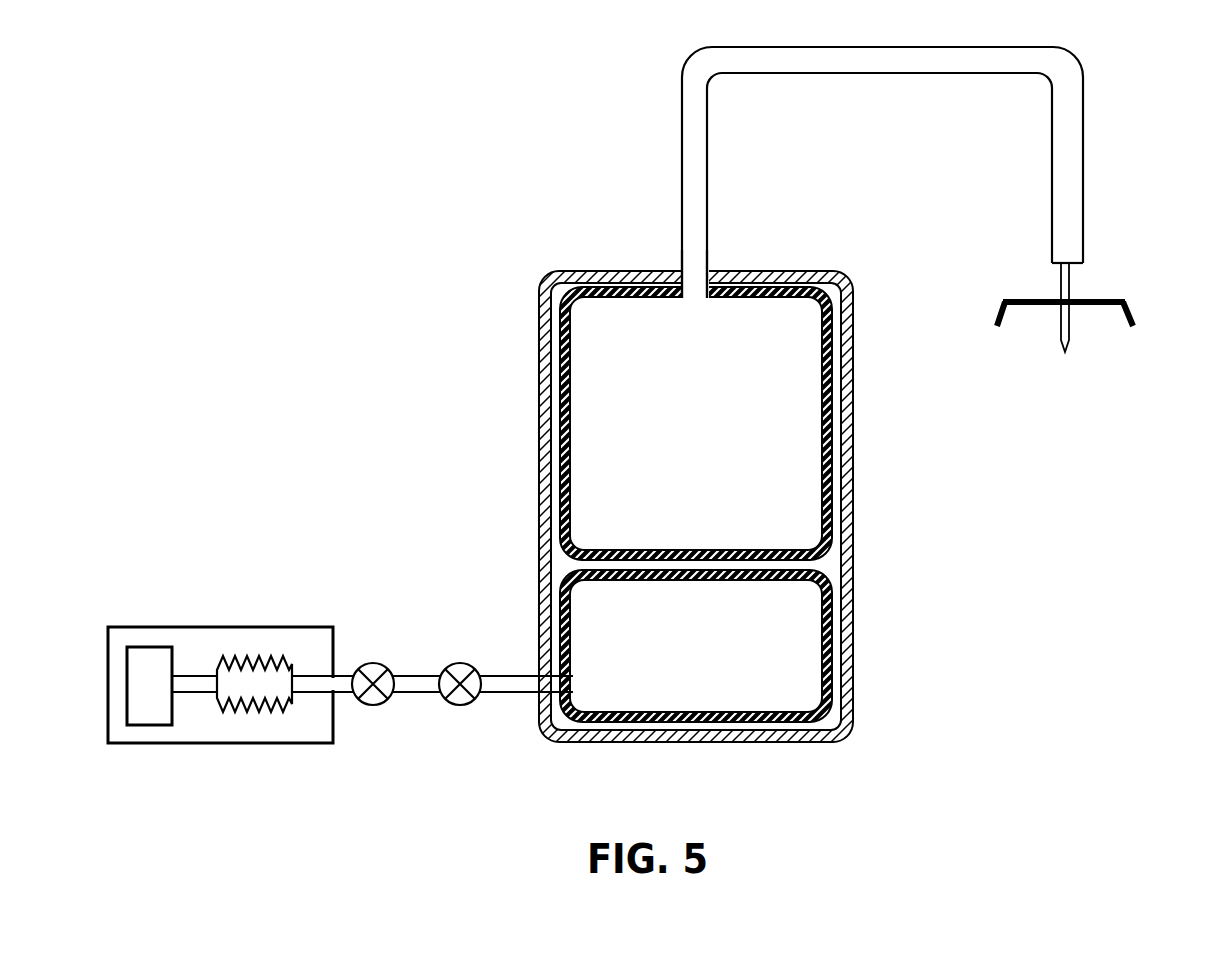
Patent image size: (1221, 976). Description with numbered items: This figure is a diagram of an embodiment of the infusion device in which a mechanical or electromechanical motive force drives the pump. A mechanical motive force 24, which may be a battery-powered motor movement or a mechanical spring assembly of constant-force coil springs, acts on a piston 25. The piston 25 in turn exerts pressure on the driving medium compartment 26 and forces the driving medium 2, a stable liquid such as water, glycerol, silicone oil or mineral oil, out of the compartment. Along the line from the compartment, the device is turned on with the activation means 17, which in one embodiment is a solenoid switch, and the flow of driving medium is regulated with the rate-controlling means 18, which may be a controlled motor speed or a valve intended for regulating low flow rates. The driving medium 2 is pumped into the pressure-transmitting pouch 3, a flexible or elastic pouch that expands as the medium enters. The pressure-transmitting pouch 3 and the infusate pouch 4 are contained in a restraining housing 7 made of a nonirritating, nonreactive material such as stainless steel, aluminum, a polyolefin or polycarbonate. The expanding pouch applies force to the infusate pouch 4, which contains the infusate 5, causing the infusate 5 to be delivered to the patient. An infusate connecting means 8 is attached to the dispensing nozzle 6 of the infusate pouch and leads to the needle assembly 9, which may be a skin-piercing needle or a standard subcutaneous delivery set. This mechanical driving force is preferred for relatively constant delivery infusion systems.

The driving medium 2 is at (777, 668).
The pressure-transmitting pouch 3 is at (823, 590).
The infusate pouch 4 is at (823, 448).
The infusate 5 is at (763, 353).
The dispensing nozzle 6 is at (707, 251).
The housing 7 is at (546, 277).
The infusate connecting means 8 is at (683, 148).
The needle assembly 9 is at (1107, 282).
The activation means 17 is at (373, 705).
The rate-controlling means 18 is at (462, 705).
The mechanical motive force 24 is at (152, 645).
The piston 25 is at (187, 672).
The driving medium compartment 26 is at (275, 652).